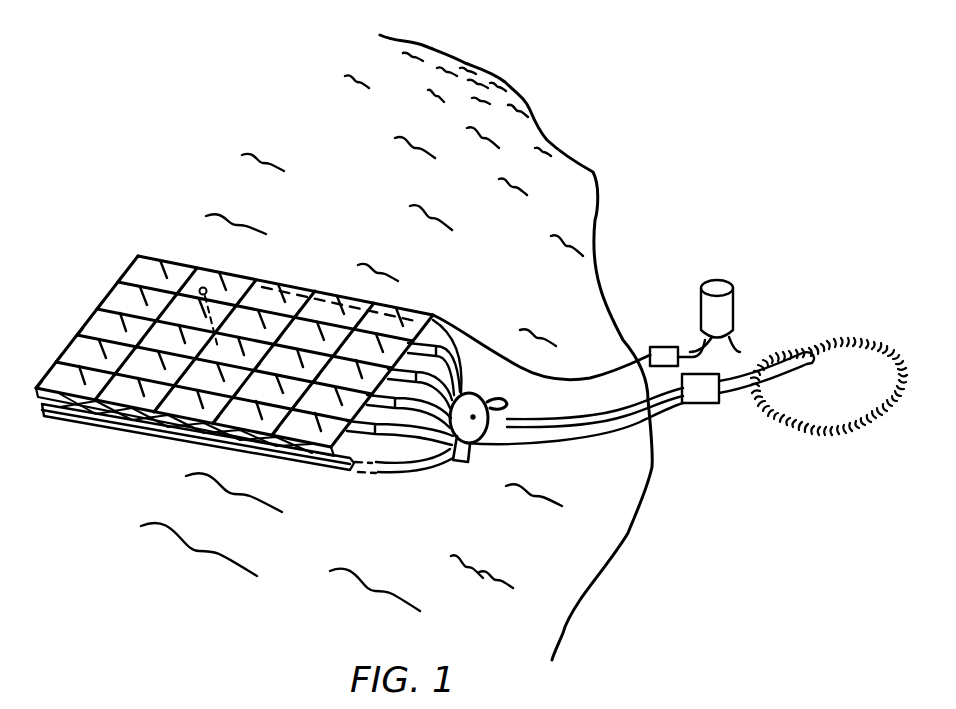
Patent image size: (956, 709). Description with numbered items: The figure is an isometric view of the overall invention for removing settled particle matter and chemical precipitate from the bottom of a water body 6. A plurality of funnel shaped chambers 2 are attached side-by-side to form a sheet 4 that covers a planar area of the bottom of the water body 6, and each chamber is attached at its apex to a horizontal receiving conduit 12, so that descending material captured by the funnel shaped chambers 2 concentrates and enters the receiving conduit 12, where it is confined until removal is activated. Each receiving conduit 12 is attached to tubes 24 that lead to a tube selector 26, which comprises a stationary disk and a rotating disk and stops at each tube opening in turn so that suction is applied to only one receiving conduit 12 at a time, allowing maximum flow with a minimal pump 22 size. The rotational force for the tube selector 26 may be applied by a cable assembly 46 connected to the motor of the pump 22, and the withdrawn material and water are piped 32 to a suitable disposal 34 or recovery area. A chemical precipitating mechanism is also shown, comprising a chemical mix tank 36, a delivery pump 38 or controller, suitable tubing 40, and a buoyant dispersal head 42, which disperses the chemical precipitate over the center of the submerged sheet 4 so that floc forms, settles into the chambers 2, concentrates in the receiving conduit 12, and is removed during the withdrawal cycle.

The funnel shaped chambers 2 is at (174, 273).
The sheet 4 is at (132, 270).
The water body 6 is at (380, 177).
The receiving conduit 12 is at (303, 462).
The pump 22 is at (700, 403).
The tubes 24 is at (405, 474).
The tube selector 26 is at (466, 398).
The pipe 32 is at (606, 428).
The disposal 34 is at (840, 373).
The chemical mix tank 36 is at (733, 302).
The delivery pump 38 is at (660, 347).
The tubing 40 is at (557, 376).
The buoyant dispersal head 42 is at (204, 289).
The cable assembly 46 is at (562, 443).